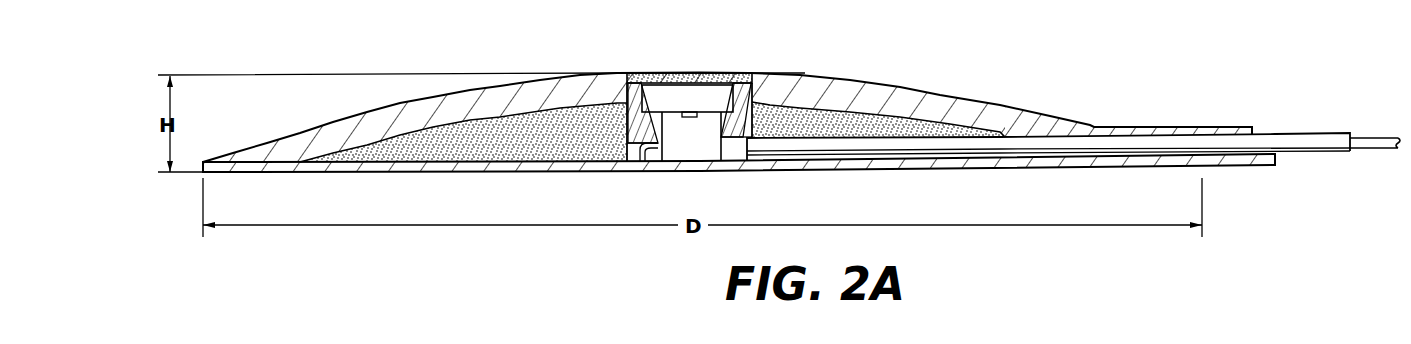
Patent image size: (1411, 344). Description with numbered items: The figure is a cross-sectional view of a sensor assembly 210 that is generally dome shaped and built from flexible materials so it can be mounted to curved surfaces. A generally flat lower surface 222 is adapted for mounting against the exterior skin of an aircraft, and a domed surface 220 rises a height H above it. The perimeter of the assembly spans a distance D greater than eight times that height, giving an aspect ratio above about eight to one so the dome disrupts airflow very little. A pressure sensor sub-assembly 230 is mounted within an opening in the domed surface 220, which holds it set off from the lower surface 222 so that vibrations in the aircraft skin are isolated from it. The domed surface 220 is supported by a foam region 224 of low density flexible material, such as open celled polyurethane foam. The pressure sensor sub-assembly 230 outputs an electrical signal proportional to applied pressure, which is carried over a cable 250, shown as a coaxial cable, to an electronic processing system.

The sensor assembly 210 is at (800, 111).
The domed surface 220 is at (1003, 105).
The lower surface 222 is at (1227, 165).
The foam region 224 is at (857, 122).
The pressure sensor sub-assembly 230 is at (688, 63).
The cable 250 is at (1297, 132).